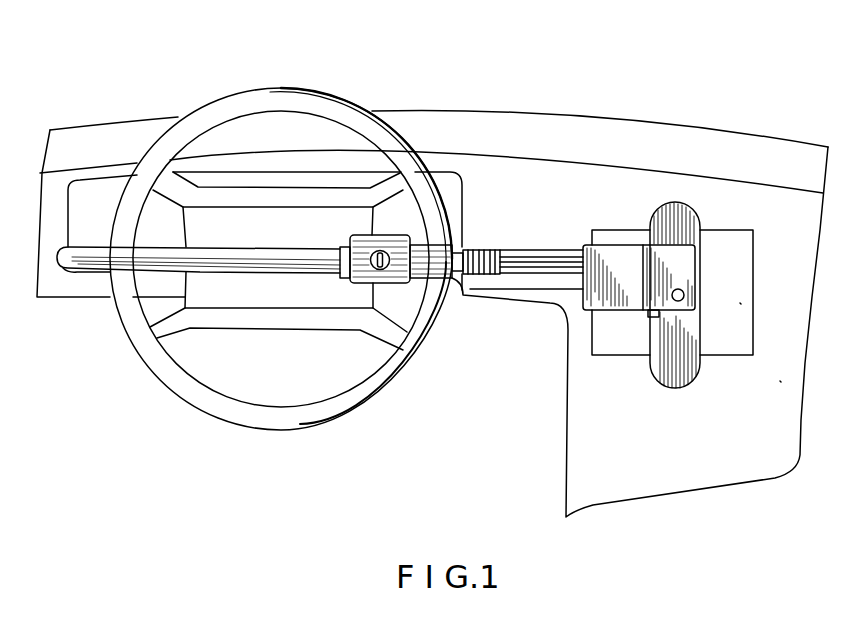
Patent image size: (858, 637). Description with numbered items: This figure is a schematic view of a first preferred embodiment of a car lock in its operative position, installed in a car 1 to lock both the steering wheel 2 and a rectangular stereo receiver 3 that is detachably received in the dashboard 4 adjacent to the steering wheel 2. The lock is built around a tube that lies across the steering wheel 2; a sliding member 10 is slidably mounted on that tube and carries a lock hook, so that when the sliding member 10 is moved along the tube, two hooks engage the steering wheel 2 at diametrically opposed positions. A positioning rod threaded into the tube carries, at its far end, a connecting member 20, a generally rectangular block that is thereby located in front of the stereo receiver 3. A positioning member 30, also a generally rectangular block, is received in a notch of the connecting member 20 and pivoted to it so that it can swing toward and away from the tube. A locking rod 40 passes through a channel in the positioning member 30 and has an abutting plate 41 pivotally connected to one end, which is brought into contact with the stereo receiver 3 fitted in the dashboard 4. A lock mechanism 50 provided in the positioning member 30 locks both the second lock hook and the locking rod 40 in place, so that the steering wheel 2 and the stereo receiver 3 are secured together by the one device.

The car 1 is at (133, 120).
The steering wheel 2 is at (265, 103).
The stereo receiver 3 is at (740, 303).
The dashboard 4 is at (780, 381).
The sliding member 10 is at (388, 254).
The connecting member 20 is at (590, 245).
The positioning member 30 is at (700, 258).
The locking rod 40 is at (684, 300).
The abutting plate 41 is at (678, 215).
The lock mechanism 50 is at (652, 320).